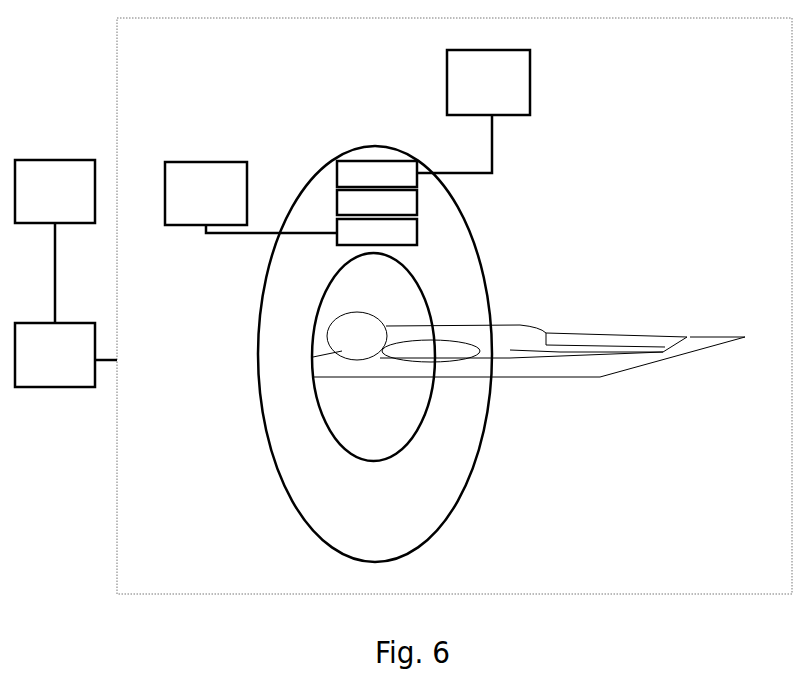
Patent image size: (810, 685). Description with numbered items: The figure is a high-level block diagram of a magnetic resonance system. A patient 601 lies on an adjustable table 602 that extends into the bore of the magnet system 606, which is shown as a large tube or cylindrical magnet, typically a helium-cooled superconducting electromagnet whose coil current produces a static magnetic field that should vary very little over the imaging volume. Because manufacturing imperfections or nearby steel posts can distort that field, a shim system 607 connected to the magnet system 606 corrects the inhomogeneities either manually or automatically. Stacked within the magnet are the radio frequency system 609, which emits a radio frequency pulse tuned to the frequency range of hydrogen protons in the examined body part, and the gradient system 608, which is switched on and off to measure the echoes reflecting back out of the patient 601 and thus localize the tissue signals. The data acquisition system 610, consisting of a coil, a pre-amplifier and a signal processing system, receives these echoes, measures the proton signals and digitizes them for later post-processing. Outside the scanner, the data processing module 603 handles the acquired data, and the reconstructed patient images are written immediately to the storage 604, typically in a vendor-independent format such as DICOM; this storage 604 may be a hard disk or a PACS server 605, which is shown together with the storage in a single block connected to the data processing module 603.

The patient 601 is at (508, 337).
The adjustable table 602 is at (598, 368).
The data processing module 603 is at (66, 355).
The storage 604 is at (55, 241).
The PACS server 605 is at (55, 241).
The magnet system 606 is at (377, 174).
The shim system 607 is at (473, 111).
The gradient system 608 is at (377, 202).
The radio frequency system 609 is at (377, 232).
The data acquisition system 610 is at (251, 197).